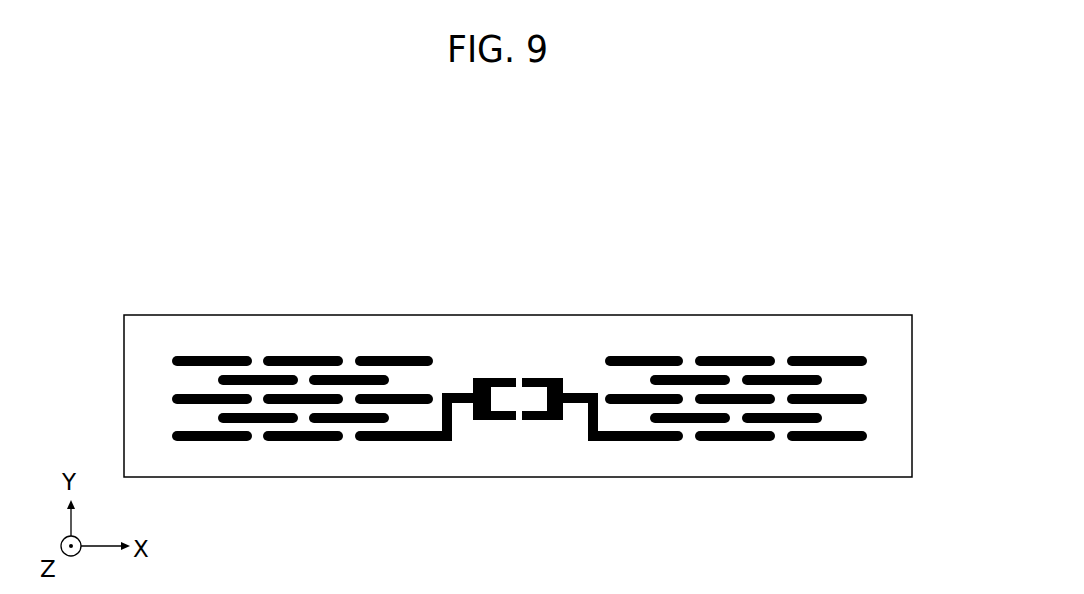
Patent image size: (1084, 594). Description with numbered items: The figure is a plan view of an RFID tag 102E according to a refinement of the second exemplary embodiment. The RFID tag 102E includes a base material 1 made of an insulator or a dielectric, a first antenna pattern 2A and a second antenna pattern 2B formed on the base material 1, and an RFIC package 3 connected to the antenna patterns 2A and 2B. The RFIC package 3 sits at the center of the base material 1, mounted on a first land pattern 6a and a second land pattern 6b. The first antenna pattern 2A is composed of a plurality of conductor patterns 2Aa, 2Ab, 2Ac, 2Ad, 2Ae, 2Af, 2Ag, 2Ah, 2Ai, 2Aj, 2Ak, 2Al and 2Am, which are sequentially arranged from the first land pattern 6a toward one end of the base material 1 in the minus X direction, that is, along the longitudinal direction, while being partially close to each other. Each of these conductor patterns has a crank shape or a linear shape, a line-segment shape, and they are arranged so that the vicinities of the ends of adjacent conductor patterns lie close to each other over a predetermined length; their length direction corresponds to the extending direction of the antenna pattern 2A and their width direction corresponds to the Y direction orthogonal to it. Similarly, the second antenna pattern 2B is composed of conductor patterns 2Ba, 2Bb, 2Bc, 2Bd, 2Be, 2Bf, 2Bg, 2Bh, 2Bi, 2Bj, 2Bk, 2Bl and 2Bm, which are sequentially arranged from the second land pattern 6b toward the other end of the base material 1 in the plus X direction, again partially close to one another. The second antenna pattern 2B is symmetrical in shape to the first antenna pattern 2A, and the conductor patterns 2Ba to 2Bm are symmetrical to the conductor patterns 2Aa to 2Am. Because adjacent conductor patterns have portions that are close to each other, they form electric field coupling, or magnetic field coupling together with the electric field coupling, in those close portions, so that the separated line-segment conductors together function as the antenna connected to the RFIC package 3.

The RFID tag 102E is at (645, 151).
The base material 1 is at (487, 315).
The first antenna pattern 2A is at (447, 237).
The second antenna pattern 2B is at (872, 237).
The conductor pattern 2Aa is at (393, 441).
The conductor pattern 2Ab is at (347, 422).
The conductor pattern 2Ac is at (303, 441).
The conductor pattern 2Ad is at (257, 422).
The conductor pattern 2Ae is at (212, 441).
The conductor pattern 2Af is at (413, 395).
The conductor pattern 2Ag is at (350, 376).
The conductor pattern 2Ah is at (302, 395).
The conductor pattern 2Ai is at (260, 376).
The conductor pattern 2Aj is at (177, 395).
The conductor pattern 2Ak is at (395, 357).
The conductor pattern 2Al is at (330, 357).
The conductor pattern 2Am is at (202, 357).
The conductor pattern 2Ba is at (645, 441).
The conductor pattern 2Bb is at (692, 422).
The conductor pattern 2Bc is at (737, 441).
The conductor pattern 2Bd is at (782, 422).
The conductor pattern 2Be is at (827, 441).
The conductor pattern 2Bf is at (625, 395).
The conductor pattern 2Bg is at (690, 376).
The conductor pattern 2Bh is at (737, 395).
The conductor pattern 2Bi is at (778, 376).
The conductor pattern 2Bj is at (857, 395).
The conductor pattern 2Bk is at (645, 357).
The conductor pattern 2Bl is at (708, 357).
The conductor pattern 2Bm is at (837, 357).
The RFIC package 3 is at (520, 393).
The first land pattern 6a is at (482, 420).
The second land pattern 6b is at (553, 378).